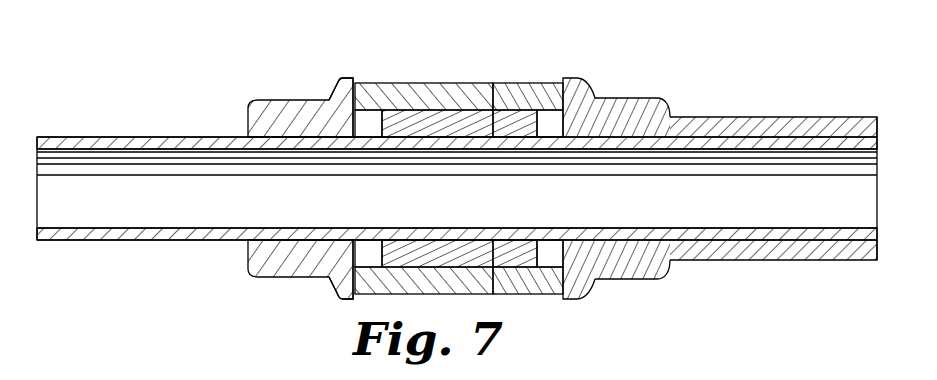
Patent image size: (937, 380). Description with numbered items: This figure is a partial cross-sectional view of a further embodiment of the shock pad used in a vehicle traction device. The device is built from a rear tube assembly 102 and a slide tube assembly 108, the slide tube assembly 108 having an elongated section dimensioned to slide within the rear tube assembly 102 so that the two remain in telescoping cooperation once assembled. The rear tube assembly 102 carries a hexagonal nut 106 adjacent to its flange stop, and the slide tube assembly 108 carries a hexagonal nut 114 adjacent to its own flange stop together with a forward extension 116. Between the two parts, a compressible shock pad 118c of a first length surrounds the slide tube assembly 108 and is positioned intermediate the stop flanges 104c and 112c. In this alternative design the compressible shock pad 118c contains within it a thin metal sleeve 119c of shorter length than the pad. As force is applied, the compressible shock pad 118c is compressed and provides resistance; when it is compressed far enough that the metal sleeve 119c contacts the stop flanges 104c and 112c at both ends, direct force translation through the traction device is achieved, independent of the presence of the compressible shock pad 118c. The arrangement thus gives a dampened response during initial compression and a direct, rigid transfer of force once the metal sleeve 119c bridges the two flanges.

The rear tube assembly 102 is at (766, 117).
The stop flange 104c is at (567, 78).
The hexagonal nut 106 is at (633, 98).
The slide tube assembly 108 is at (192, 105).
The stop flange 112c is at (345, 78).
The hexagonal nut 114 is at (292, 100).
The forward extension 116 is at (100, 136).
The compressible shock pad 118c is at (422, 83).
The metal sleeve 119c is at (493, 83).